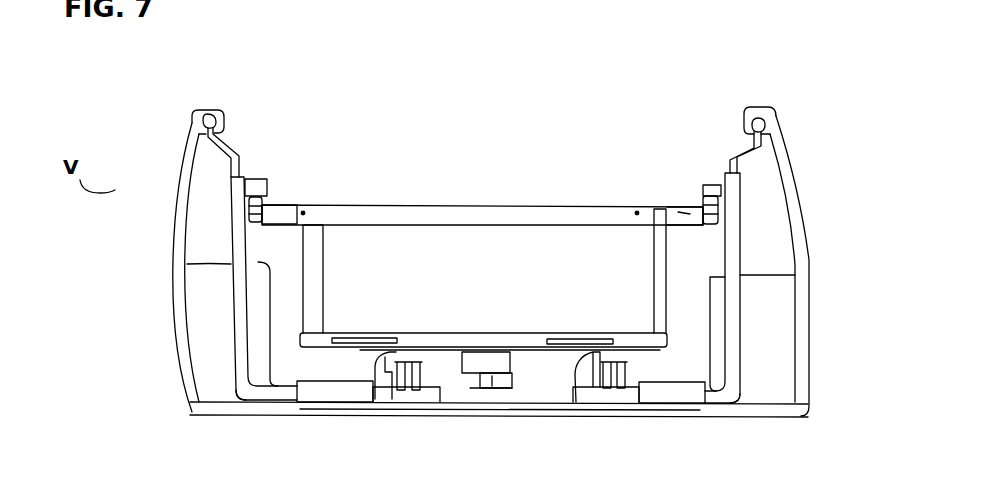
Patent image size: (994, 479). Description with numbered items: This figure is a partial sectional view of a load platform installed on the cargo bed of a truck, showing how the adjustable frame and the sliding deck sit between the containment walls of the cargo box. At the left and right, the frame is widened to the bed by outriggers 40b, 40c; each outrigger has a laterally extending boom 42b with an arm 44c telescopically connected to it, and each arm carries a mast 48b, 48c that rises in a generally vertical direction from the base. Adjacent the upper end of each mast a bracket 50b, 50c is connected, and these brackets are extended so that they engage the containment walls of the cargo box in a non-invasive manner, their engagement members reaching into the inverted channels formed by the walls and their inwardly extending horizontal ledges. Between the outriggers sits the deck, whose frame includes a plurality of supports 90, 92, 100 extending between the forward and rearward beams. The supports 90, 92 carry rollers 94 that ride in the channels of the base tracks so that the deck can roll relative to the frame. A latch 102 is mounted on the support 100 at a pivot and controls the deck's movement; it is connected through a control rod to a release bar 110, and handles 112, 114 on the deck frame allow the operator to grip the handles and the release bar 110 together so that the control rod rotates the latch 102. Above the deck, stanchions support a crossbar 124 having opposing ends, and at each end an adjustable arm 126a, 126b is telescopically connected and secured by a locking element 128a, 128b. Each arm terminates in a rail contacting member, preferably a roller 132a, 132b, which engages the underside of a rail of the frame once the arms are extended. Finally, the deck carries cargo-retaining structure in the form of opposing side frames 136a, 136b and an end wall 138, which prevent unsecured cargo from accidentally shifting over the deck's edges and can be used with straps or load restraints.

The outrigger 40b is at (212, 361).
The outrigger 40c is at (776, 296).
The boom 42b is at (340, 394).
The arm 44c is at (213, 438).
The mast 48b is at (237, 372).
The mast 48c is at (735, 333).
The bracket 50b is at (233, 140).
The bracket 50c is at (727, 143).
The support 90 is at (383, 360).
The support 92 is at (590, 358).
The rollers 94 is at (403, 380).
The support 100 is at (462, 372).
The latch 102 is at (492, 382).
The release bar 110 is at (503, 337).
The handle 112 is at (365, 338).
The handle 114 is at (570, 338).
The crossbar 124 is at (460, 222).
The adjustable arm 126a is at (278, 207).
The adjustable arm 126b is at (678, 203).
The locking element 128a is at (305, 212).
The locking element 128b is at (638, 215).
The roller 132a is at (268, 200).
The roller 132b is at (676, 210).
The side frame 136a is at (310, 263).
The side frame 136b is at (660, 257).
The end wall 138 is at (450, 298).